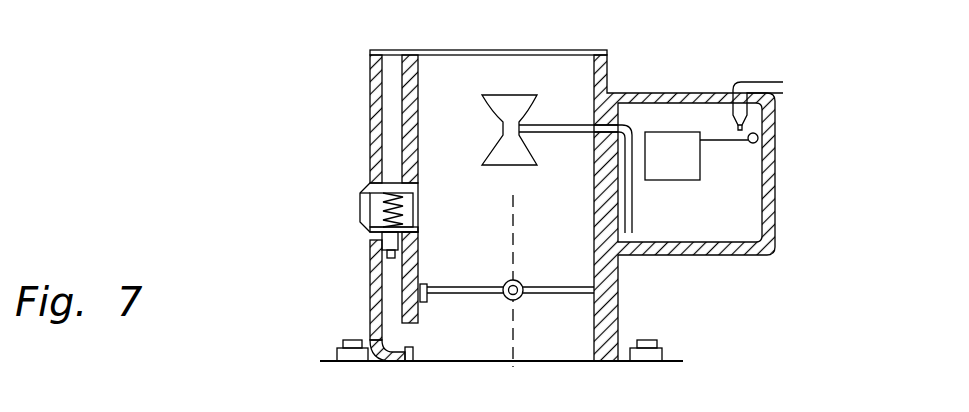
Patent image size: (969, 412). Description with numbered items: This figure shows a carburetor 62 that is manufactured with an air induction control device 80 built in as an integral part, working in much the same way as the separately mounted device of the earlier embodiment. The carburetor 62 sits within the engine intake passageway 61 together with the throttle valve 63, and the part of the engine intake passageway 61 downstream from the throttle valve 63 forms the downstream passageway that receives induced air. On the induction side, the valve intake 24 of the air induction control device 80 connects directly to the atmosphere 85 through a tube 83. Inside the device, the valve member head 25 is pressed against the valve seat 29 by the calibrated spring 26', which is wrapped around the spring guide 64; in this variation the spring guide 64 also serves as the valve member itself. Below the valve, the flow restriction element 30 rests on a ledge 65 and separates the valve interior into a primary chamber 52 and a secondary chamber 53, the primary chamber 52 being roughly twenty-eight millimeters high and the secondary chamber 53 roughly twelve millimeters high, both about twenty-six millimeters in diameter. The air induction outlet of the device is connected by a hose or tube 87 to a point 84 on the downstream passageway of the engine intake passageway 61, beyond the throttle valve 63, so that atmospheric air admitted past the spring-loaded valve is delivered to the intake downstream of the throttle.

The air induction control device 80 is at (190, 172).
The tube 83 is at (370, 68).
The point on the downstream passageway 84 is at (407, 332).
The atmosphere 85 is at (392, 52).
The tube 87 is at (370, 297).
The valve intake 24 is at (392, 170).
The valve member head 25 is at (422, 170).
The calibrated spring 26' is at (438, 228).
The valve seat 29 is at (372, 187).
The flow restriction element 30 is at (362, 214).
The primary chamber 52 is at (365, 200).
The secondary chamber 53 is at (383, 245).
The spring guide 64 is at (385, 200).
The ledge 65 is at (420, 234).
The engine intake passageway 61 is at (578, 260).
The carburetor 62 is at (517, 153).
The throttle valve 63 is at (573, 295).